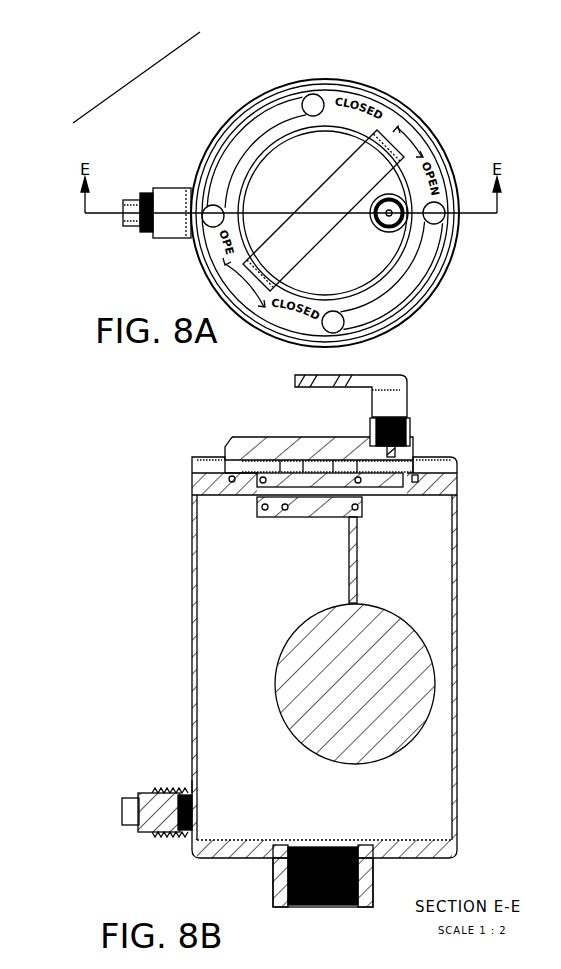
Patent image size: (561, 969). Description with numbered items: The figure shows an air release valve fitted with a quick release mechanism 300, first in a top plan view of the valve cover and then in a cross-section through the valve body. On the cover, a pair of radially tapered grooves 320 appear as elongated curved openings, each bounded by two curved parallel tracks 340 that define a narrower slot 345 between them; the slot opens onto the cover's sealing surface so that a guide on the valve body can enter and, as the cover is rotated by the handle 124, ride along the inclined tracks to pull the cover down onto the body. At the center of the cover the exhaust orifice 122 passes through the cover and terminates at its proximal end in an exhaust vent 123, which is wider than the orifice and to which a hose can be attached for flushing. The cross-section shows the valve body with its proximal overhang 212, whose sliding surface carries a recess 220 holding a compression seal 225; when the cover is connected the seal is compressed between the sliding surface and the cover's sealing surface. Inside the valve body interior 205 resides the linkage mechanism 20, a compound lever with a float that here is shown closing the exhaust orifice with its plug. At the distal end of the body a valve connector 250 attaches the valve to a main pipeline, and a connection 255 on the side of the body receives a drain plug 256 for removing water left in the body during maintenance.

In FIG. 8A, the quick release mechanism 300 is at (239, 200).
In FIG. 8A, the radially tapered groove 320 is at (287, 210).
In FIG. 8B, the radially tapered groove 320 is at (256, 444).
In FIG. 8A, the parallel tracks 340 is at (287, 100).
In FIG. 8B, the parallel tracks 340 is at (205, 468).
In FIG. 8A, the slot 345 is at (257, 210).
In FIG. 8B, the slot 345 is at (230, 476).
In FIG. 8A, the handle 124 is at (369, 179).
In FIG. 8A, the exhaust vent 123 is at (450, 169).
In FIG. 8B, the exhaust orifice 122 is at (403, 447).
In FIG. 8B, the overhang 212 is at (367, 476).
In FIG. 8B, the valve body interior 205 is at (270, 665).
In FIG. 8B, the linkage mechanism 20 is at (367, 487).
In FIG. 8B, the recess 220 is at (235, 470).
In FIG. 8B, the compression seal 225 is at (230, 480).
In FIG. 8B, the valve connector 250 is at (273, 880).
In FIG. 8B, the connection 255 is at (130, 779).
In FIG. 8B, the drain plug 256 is at (81, 800).